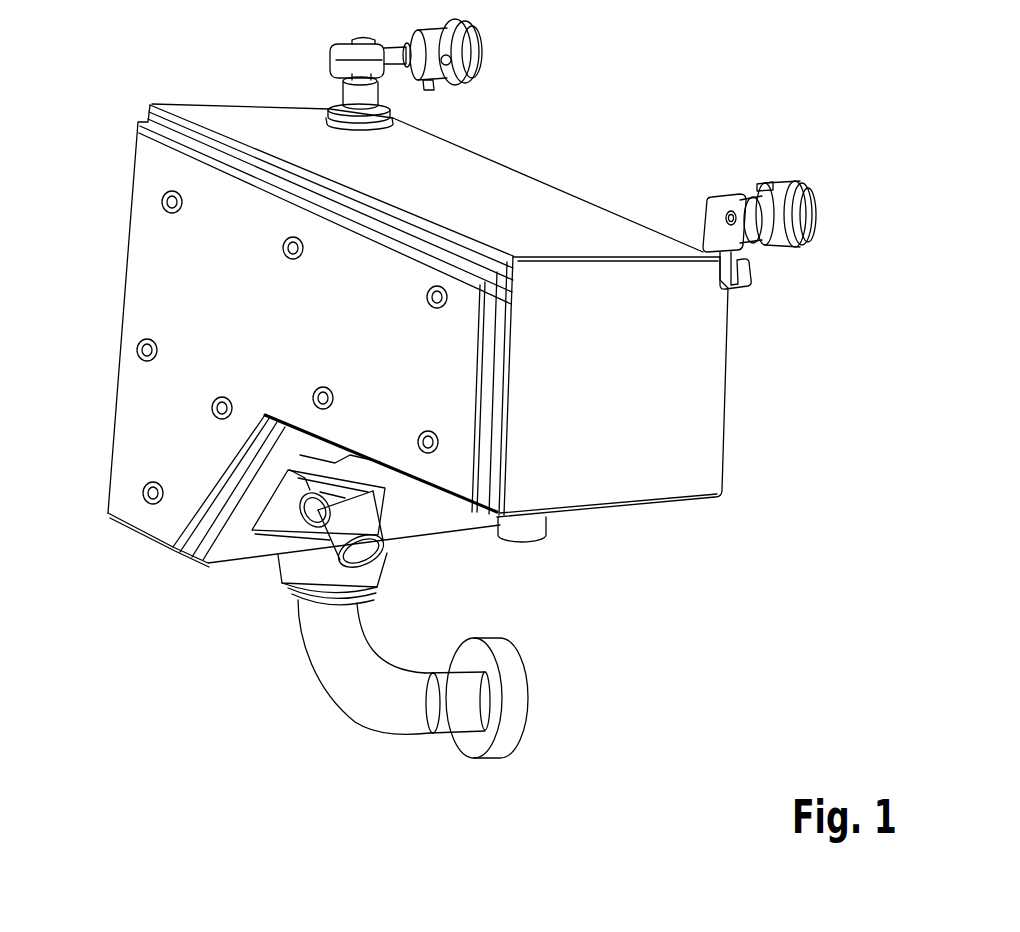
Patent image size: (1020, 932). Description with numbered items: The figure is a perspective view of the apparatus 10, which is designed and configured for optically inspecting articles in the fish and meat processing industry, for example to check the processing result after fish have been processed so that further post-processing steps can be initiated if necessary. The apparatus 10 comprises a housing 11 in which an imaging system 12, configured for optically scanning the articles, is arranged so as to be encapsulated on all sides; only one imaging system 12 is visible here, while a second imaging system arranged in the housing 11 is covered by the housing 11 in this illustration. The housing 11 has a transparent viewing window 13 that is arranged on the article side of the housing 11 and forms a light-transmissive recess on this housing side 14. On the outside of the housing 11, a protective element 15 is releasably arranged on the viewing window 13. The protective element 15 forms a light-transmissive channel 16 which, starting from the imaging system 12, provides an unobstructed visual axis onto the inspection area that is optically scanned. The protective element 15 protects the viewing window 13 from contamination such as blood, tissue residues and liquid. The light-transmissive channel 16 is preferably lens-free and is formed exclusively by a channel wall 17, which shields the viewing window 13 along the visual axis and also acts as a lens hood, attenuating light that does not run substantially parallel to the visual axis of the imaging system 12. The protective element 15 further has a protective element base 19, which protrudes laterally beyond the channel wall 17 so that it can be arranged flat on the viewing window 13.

The apparatus 10 is at (108, 106).
The housing 11 is at (505, 186).
The imaging system 12 is at (317, 462).
The transparent viewing window 13 is at (263, 533).
The housing side 14 is at (228, 538).
The protective element 15 is at (392, 556).
The light-transmissive channel 16 is at (360, 556).
The channel wall 17 is at (362, 525).
The protective element base 19 is at (350, 487).